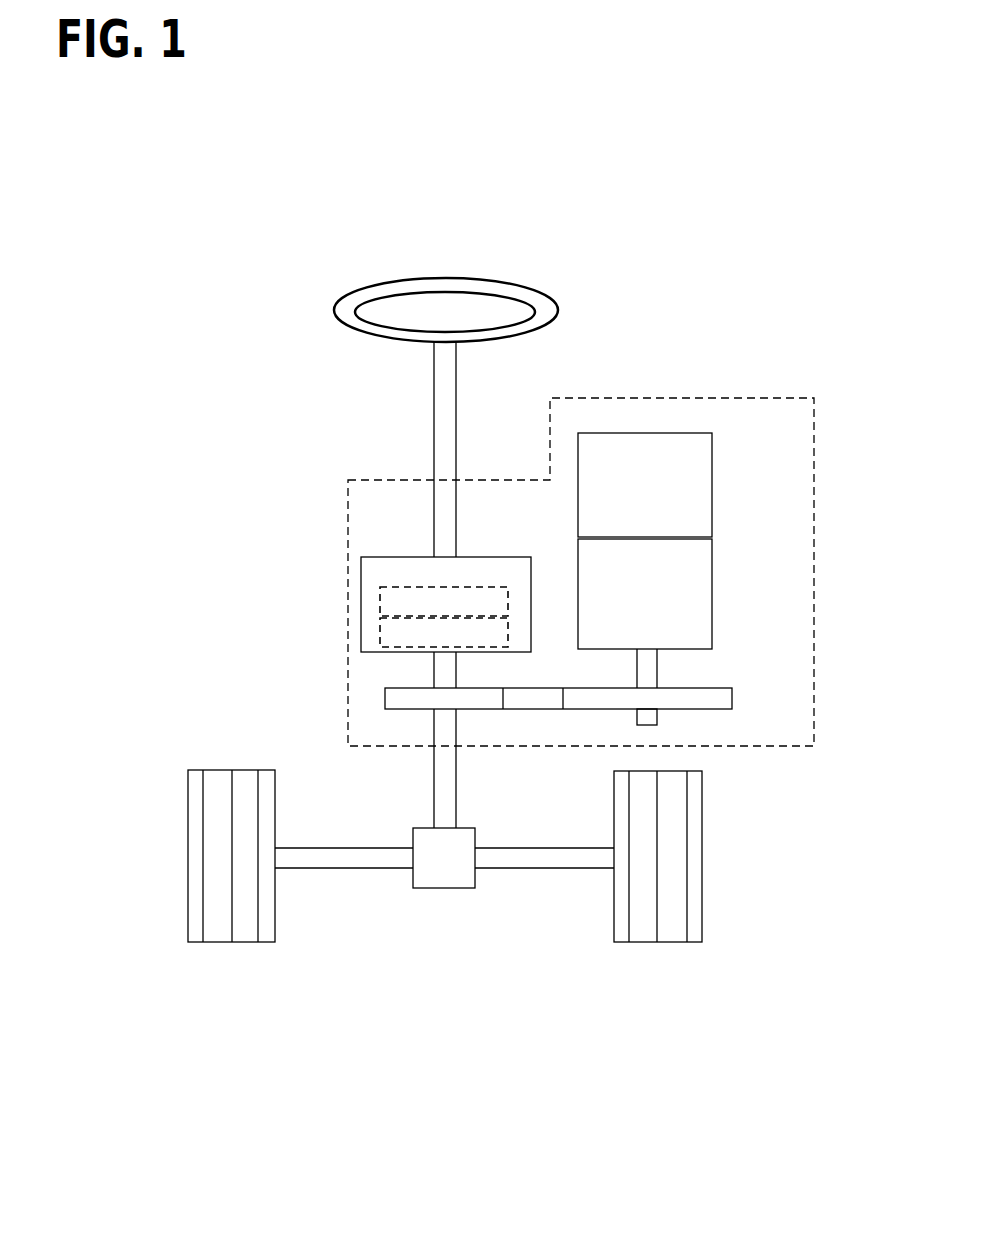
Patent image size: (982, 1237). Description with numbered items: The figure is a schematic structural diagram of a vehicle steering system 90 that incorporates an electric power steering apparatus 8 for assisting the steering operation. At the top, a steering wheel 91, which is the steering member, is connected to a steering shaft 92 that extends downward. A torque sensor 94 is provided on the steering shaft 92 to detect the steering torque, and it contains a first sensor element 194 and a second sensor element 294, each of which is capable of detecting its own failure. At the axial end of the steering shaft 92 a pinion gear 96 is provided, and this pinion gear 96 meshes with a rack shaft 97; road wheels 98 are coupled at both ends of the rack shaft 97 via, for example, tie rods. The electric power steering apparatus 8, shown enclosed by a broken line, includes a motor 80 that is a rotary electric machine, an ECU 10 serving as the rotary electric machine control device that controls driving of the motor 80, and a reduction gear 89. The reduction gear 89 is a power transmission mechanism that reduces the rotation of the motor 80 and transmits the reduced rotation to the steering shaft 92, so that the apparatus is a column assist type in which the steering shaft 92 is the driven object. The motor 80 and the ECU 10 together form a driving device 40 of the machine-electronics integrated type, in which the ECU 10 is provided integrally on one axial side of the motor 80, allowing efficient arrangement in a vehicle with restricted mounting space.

The electric power steering apparatus 8 is at (760, 396).
The ECU 10 is at (713, 462).
The driving device 40 is at (722, 629).
The motor 80 is at (713, 570).
The reduction gear 89 is at (733, 697).
The steering system 90 is at (405, 1020).
The steering wheel 91 is at (334, 312).
The steering shaft 92 is at (433, 400).
The torque sensor 94 is at (406, 575).
The first sensor element 194 is at (380, 604).
The second sensor element 294 is at (380, 638).
The pinion gear 96 is at (434, 889).
The rack shaft 97 is at (338, 869).
The road wheels 98 is at (247, 942).